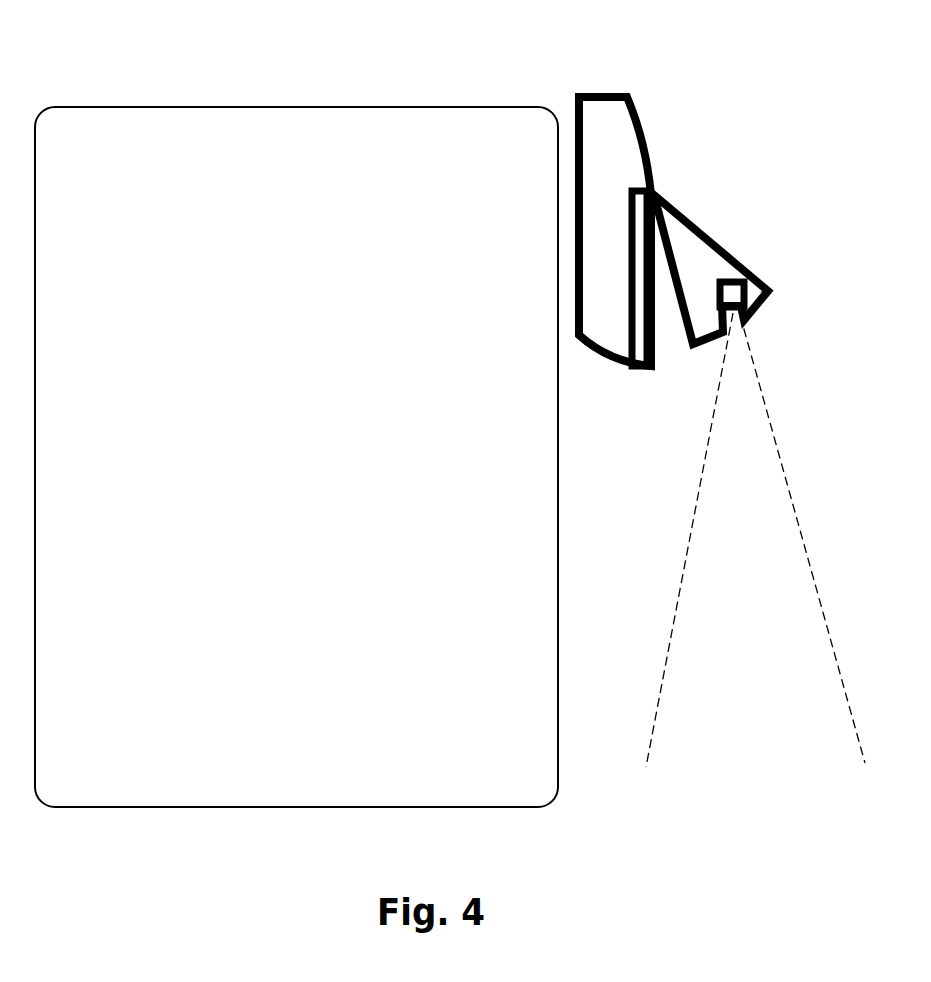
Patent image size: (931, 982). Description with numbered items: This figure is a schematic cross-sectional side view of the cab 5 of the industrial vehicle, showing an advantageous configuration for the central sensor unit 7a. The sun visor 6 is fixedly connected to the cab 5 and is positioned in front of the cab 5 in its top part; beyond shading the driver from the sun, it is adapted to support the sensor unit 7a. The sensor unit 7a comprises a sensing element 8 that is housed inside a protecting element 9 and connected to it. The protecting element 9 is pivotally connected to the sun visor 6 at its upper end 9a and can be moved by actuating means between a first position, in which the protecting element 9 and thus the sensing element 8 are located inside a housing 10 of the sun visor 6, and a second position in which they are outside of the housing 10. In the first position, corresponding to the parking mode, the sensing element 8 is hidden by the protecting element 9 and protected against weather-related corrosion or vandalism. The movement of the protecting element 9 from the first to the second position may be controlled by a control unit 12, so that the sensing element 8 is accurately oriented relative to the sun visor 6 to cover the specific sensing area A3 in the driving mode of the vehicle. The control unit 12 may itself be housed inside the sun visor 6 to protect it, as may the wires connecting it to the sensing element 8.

The cab 5 is at (296, 457).
The sun visor 6 is at (606, 93).
The central sensor unit 7a is at (705, 211).
The sensing element 8 is at (734, 289).
The protecting element 9 is at (772, 291).
The upper end 9a is at (663, 212).
The housing 10 is at (640, 343).
The control unit 12 is at (614, 152).
The sensing area A3 is at (755, 540).